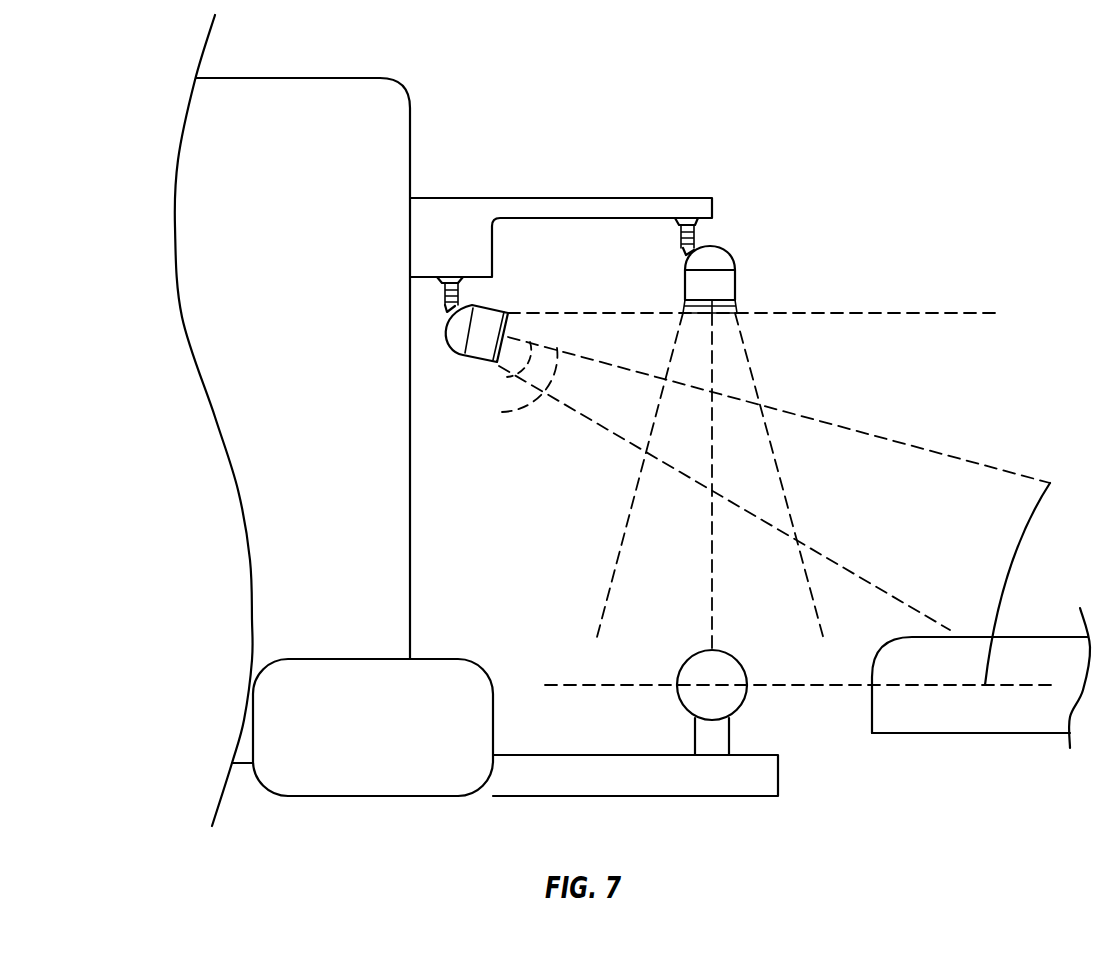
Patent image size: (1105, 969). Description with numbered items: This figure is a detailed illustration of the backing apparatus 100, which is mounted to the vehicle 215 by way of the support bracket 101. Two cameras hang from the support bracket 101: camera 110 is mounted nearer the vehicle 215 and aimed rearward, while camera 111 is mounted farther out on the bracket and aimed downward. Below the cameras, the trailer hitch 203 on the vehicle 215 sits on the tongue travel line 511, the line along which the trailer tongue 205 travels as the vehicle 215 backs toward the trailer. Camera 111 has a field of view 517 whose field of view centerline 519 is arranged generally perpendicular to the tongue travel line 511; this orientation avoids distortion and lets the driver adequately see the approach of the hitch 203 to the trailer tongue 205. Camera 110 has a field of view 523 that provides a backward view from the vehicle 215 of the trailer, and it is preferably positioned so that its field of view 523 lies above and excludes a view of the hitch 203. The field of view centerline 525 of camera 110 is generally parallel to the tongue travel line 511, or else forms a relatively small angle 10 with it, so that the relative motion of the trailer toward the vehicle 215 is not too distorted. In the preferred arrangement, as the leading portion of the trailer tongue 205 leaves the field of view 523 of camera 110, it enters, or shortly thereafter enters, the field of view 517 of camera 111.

The backing apparatus 100 is at (698, 150).
The support bracket 101 is at (450, 212).
The camera 110 is at (488, 317).
The camera 111 is at (727, 280).
The vehicle 215 is at (331, 232).
The field of view 517 is at (755, 378).
The field of view centerline 519 is at (714, 628).
The field of view 523 is at (506, 378).
The field of view centerline 525 is at (510, 409).
The trailer hitch 203 is at (700, 652).
The tongue travel line 511 is at (580, 684).
The trailer tongue 205 is at (912, 636).
The angle 10 is at (1002, 587).